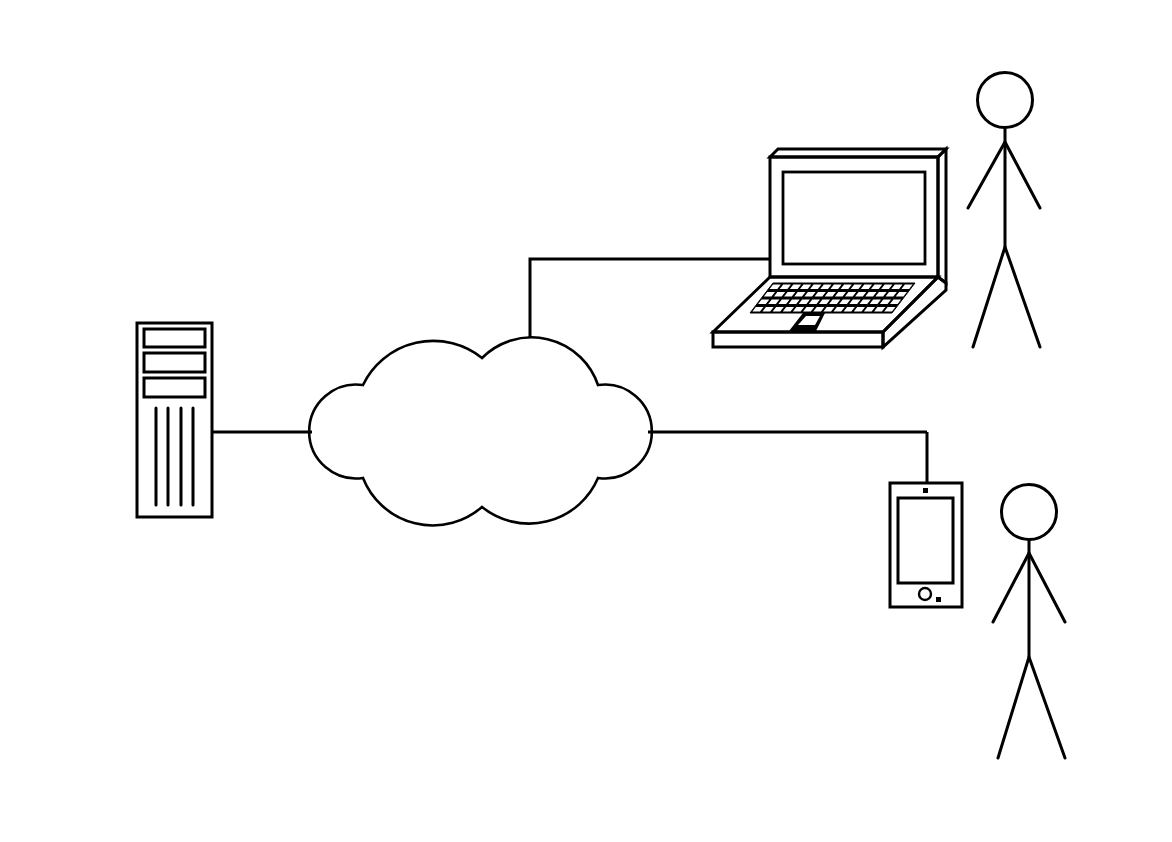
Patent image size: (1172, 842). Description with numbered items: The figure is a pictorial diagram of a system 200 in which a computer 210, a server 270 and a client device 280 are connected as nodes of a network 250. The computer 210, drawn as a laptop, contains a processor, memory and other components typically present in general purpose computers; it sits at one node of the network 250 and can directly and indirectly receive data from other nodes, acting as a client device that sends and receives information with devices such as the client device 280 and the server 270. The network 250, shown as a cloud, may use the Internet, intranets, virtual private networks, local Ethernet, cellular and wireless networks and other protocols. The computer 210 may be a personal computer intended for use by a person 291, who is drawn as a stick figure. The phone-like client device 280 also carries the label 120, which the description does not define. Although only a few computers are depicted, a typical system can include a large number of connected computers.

The system 200 is at (142, 30).
The computer 210 is at (770, 197).
The network 250 is at (433, 337).
The server 270 is at (137, 336).
The client device 280 is at (890, 503).
The mobile device 120 is at (885, 545).
The person 291 is at (1055, 553).